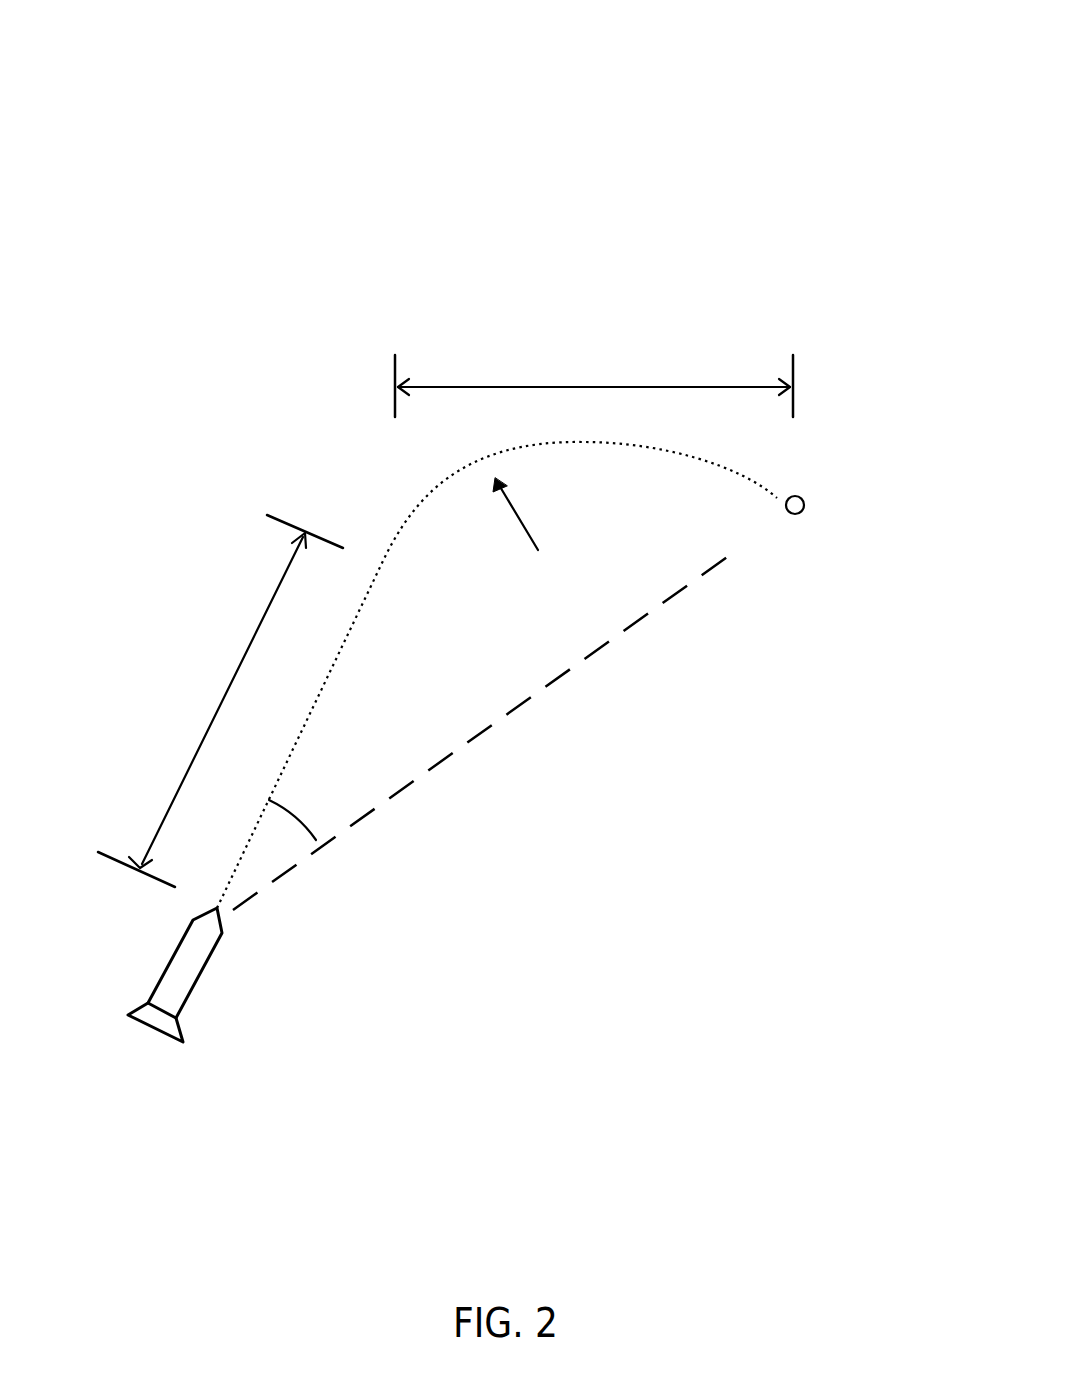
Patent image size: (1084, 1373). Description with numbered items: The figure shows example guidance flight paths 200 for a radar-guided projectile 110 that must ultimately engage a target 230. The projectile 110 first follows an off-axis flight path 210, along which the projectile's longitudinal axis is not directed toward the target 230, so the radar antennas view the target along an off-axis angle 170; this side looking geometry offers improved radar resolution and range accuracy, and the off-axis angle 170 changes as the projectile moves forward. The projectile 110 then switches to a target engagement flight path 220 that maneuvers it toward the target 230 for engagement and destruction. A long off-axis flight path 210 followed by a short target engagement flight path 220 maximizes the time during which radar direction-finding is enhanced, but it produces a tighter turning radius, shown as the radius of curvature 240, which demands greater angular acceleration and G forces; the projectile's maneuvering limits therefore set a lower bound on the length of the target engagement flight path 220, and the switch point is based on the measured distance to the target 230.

The guidance flight paths 200 is at (528, 48).
The off-axis flight path 210 is at (159, 653).
The target engagement flight path 220 is at (595, 356).
The target 230 is at (811, 550).
The radius of curvature 240 is at (497, 625).
The off-axis angle 170 is at (350, 870).
The projectile 110 is at (233, 1011).